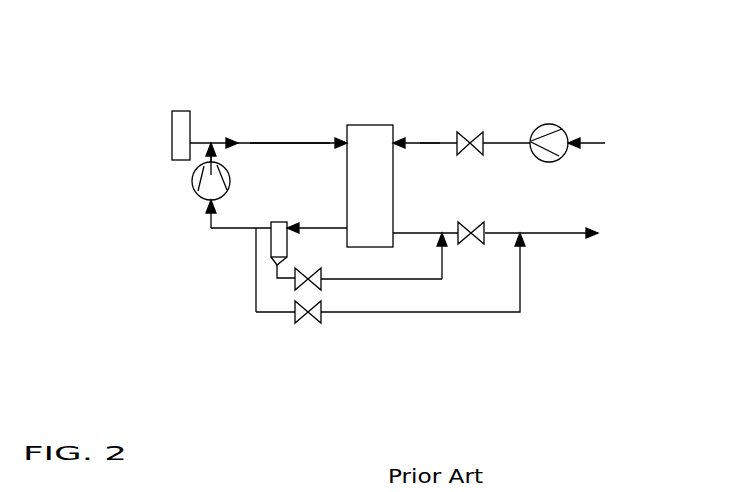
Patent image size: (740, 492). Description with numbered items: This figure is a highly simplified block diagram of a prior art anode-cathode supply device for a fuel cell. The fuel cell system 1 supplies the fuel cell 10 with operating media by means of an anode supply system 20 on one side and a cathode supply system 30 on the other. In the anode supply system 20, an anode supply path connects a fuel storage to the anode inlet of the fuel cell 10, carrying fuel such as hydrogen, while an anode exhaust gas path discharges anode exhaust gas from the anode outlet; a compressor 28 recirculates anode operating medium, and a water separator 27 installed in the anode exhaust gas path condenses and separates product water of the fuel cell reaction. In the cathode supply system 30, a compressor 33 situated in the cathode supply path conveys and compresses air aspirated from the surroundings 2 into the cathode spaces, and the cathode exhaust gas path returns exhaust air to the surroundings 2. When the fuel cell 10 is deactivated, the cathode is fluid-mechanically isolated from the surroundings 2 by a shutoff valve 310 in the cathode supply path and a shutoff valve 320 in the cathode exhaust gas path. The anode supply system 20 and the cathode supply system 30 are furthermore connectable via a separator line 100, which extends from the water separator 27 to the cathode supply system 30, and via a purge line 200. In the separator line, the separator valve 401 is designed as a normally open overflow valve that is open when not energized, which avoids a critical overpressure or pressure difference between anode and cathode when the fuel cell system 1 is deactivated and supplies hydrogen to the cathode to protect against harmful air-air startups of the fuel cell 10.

The fuel cell system 1 is at (333, 49).
The surroundings 2 is at (630, 147).
The fuel cell 10 is at (372, 132).
The anode supply system 20 is at (266, 103).
The water separator 27 is at (275, 262).
The compressor 28 is at (193, 182).
The cathode supply system 30 is at (438, 83).
The compressor 33 is at (555, 123).
The separator line 100 is at (442, 263).
The purge line 200 is at (520, 270).
The shutoff valve 310 is at (482, 145).
The shutoff valve 320 is at (483, 228).
The separator valve 401 is at (320, 282).